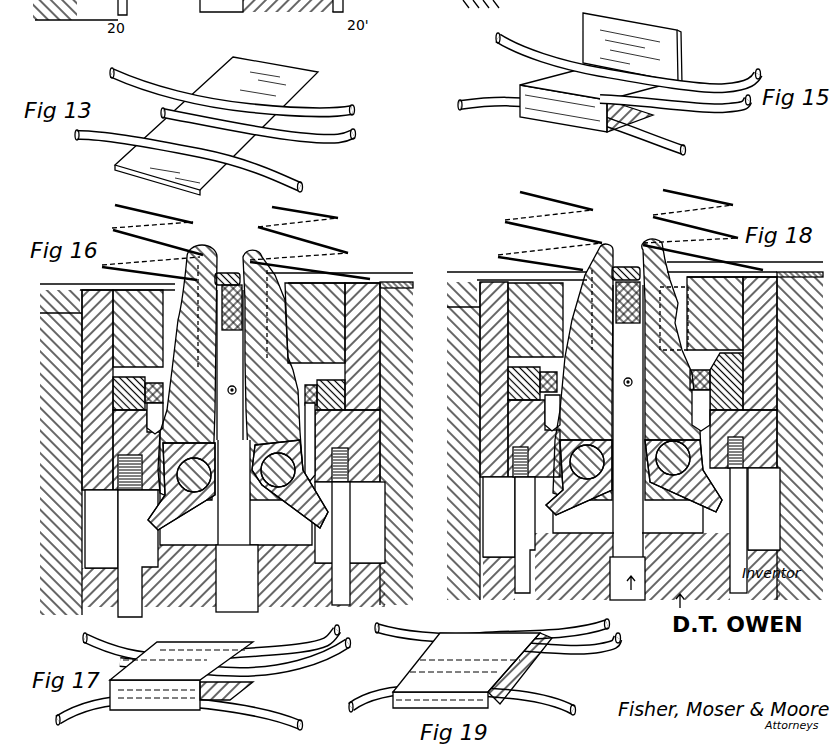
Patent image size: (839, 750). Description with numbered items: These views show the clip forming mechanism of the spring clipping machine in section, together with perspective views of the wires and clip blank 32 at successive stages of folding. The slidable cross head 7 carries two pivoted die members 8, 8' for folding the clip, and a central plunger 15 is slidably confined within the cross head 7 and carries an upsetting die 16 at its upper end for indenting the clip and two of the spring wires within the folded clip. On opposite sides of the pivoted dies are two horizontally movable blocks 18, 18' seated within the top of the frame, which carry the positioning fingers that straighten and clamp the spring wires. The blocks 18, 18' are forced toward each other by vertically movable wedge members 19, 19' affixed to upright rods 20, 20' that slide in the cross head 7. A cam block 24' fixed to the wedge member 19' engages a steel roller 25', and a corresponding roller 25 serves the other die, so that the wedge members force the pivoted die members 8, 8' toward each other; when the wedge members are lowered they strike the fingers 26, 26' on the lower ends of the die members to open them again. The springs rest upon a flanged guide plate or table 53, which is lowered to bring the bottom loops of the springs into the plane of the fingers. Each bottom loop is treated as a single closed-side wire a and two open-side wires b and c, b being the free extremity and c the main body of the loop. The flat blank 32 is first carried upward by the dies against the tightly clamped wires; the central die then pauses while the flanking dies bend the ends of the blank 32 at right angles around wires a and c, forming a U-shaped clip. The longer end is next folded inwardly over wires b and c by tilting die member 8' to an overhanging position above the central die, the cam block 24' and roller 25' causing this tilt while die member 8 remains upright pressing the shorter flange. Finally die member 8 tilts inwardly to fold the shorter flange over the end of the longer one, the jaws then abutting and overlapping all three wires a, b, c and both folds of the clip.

In FIG. 13, the rectangular blank 32 is at (320, 80).
In FIG. 13, the wire a is at (302, 177).
In FIG. 15, the wire a is at (686, 151).
In FIG. 17, the wire a is at (267, 717).
In FIG. 19, the wire a is at (560, 701).
In FIG. 13, the wire b is at (356, 135).
In FIG. 15, the wire b is at (722, 118).
In FIG. 17, the wire b is at (282, 673).
In FIG. 19, the wire b is at (608, 648).
In FIG. 13, the wire c is at (355, 112).
In FIG. 15, the wire c is at (525, 53).
In FIG. 17, the wire c is at (133, 648).
In FIG. 19, the wire c is at (580, 633).
In FIG. 16, the pivoted die member 8 is at (187, 372).
In FIG. 18, the pivoted die member 8 is at (583, 372).
In FIG. 16, the pivoted die member 8' is at (274, 370).
In FIG. 18, the pivoted die member 8' is at (677, 369).
In FIG. 16, the horizontally movable block 18 is at (97, 390).
In FIG. 18, the horizontally movable block 18 is at (487, 364).
In FIG. 16, the horizontally movable block 18' is at (359, 307).
In FIG. 16, the flanged guide plate or table 53 is at (405, 284).
In FIG. 16, the wedge member 19 is at (101, 529).
In FIG. 18, the wedge member 19 is at (499, 517).
In FIG. 16, the wedge member 19' is at (374, 382).
In FIG. 18, the wedge member 19' is at (764, 509).
In FIG. 16, the upright rod 20 is at (126, 536).
In FIG. 16, the upright rod 20' is at (350, 526).
In FIG. 18, the upright rod 20' is at (751, 515).
In FIG. 16, the cam block 24' is at (374, 388).
In FIG. 16, the steel roller 25 is at (371, 442).
In FIG. 16, the steel roller 25' is at (370, 395).
In FIG. 16, the upsetting die 16 is at (230, 362).
In FIG. 18, the upsetting die 16 is at (628, 361).
In FIG. 16, the central plunger 15 is at (237, 526).
In FIG. 18, the central plunger 15 is at (627, 520).
In FIG. 16, the finger 26 is at (181, 489).
In FIG. 16, the finger 26' is at (290, 484).
In FIG. 18, the finger 26' is at (683, 483).
In FIG. 16, the cross head 7 is at (233, 548).
In FIG. 18, the cross head 7 is at (631, 550).